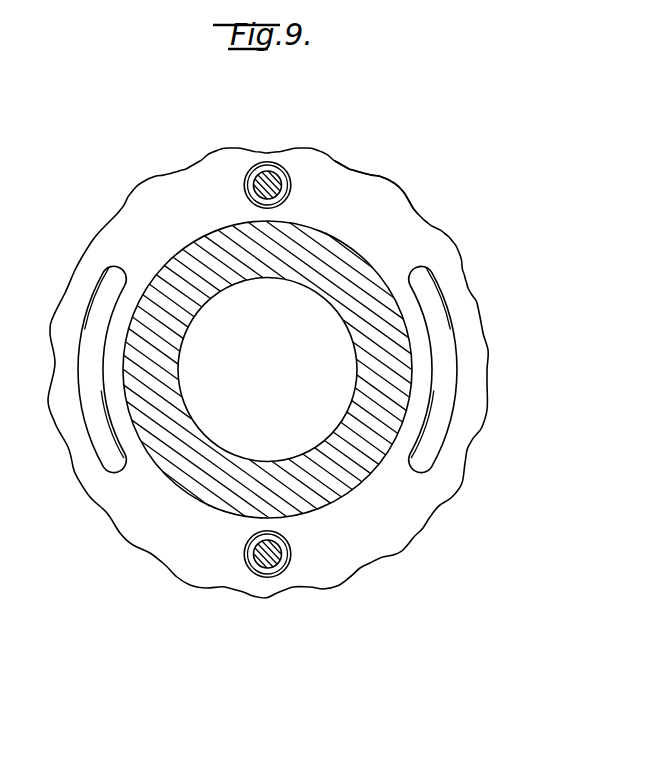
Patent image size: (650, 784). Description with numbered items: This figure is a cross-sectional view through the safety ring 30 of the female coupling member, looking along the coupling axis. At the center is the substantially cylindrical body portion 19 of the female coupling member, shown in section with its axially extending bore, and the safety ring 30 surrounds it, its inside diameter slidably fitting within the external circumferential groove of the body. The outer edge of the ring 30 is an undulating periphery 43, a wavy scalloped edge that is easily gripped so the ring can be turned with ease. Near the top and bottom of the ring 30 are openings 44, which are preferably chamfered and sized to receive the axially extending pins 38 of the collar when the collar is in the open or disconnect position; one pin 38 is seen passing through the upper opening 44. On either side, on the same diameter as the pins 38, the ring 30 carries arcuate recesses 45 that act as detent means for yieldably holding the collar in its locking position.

The body portion 19 is at (196, 440).
The safety ring 30 is at (178, 188).
The pins 38 is at (257, 164).
The undulating periphery 43 is at (390, 183).
The openings 44 is at (279, 164).
The arcuate recesses 45 is at (443, 303).